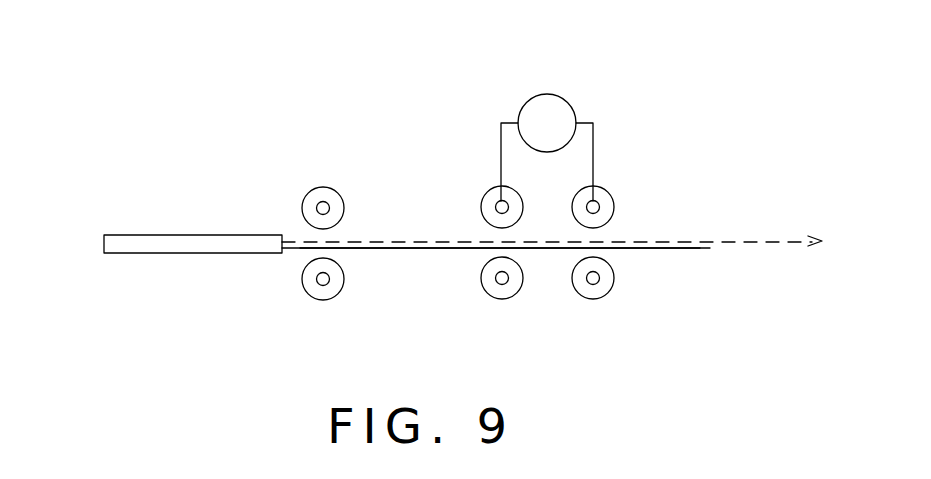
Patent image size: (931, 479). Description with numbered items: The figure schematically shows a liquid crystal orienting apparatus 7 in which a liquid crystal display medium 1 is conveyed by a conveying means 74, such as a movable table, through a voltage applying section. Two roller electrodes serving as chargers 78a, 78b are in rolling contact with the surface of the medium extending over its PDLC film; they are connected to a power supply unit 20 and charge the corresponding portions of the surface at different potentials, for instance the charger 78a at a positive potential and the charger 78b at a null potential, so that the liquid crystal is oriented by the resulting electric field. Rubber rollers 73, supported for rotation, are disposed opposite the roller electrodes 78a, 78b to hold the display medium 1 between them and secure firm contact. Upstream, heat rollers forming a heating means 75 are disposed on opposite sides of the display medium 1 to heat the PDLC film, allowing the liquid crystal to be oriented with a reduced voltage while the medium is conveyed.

The liquid crystal display medium 1 is at (156, 220).
The liquid crystal orienting apparatus 7 is at (583, 92).
The power supply unit 20 is at (529, 98).
The rubber rollers 73 is at (510, 298).
The conveying means 74 is at (413, 252).
The heating means 75 is at (323, 187).
The charger 78a is at (483, 198).
The charger 78b is at (610, 195).